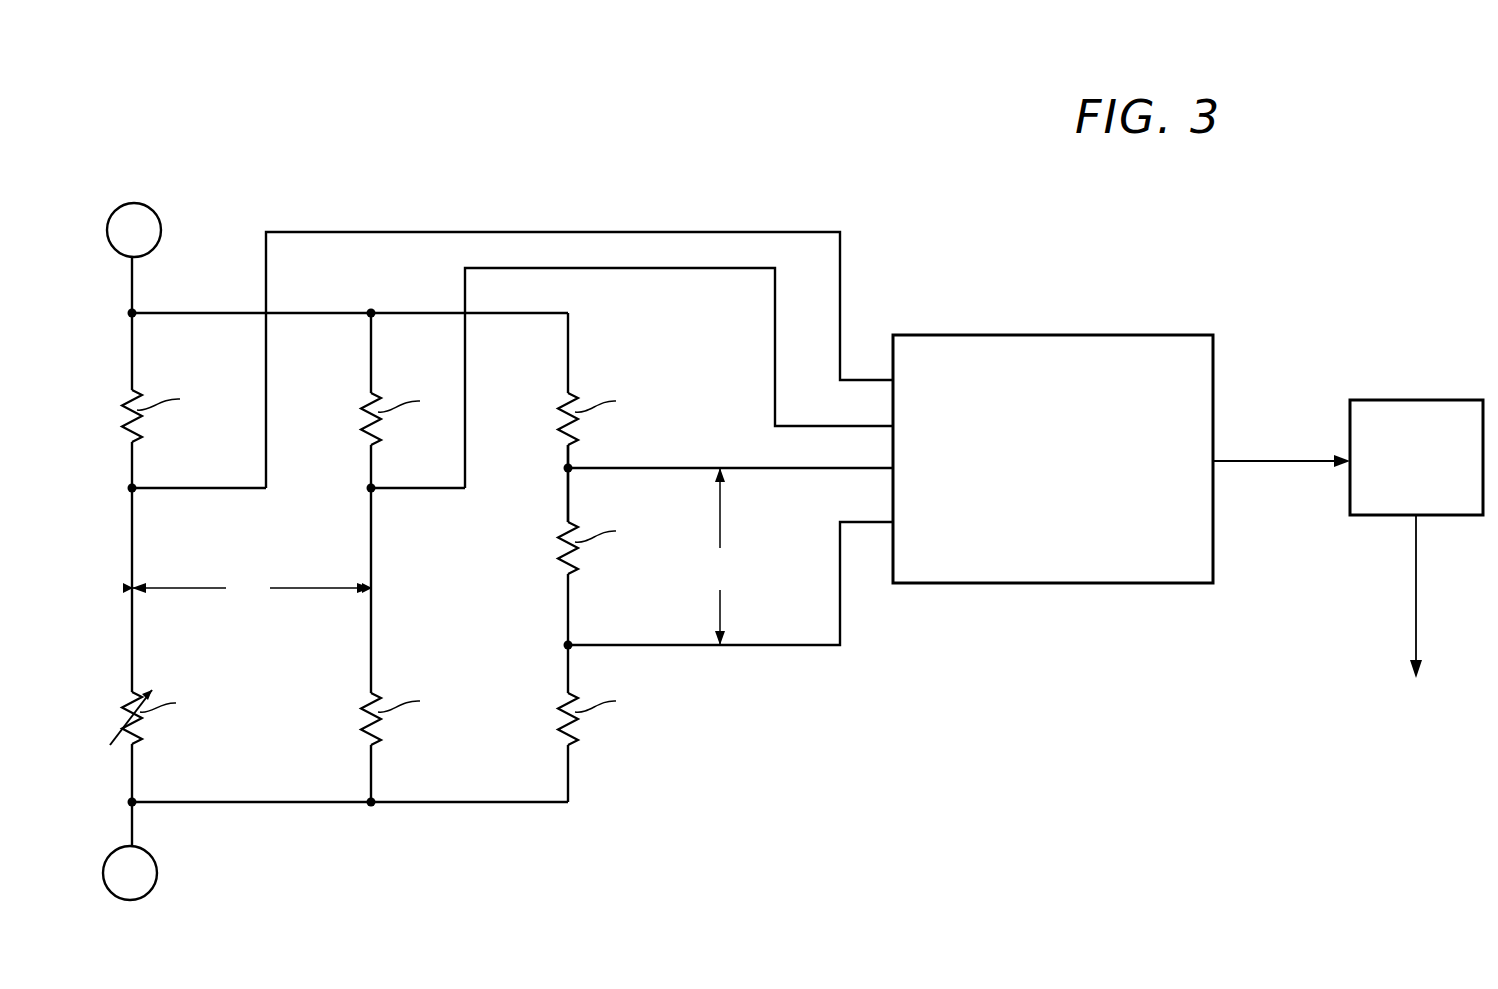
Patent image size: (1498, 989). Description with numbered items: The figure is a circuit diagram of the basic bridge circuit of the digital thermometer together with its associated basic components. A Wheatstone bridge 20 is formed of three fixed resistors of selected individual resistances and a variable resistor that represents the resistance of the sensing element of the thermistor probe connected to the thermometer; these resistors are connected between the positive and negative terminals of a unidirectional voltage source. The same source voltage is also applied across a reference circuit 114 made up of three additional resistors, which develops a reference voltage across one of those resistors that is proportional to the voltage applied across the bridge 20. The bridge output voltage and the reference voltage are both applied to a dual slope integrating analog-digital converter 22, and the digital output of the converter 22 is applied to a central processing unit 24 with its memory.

The Wheatstone bridge 20 is at (235, 754).
The dual slope integrating analog-digital converter 22 is at (1060, 584).
The central processing unit 24 is at (1437, 400).
The reference circuit 114 is at (537, 466).